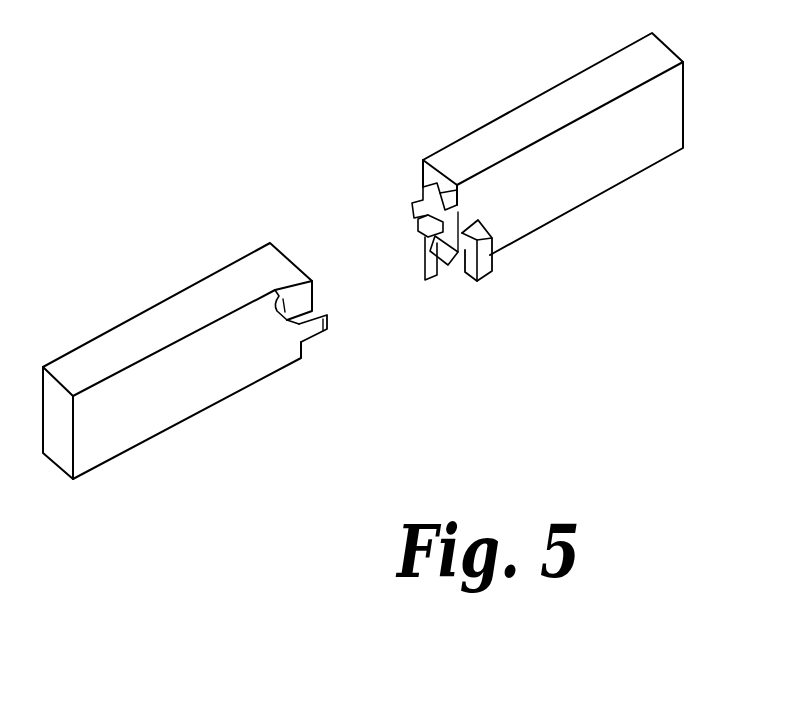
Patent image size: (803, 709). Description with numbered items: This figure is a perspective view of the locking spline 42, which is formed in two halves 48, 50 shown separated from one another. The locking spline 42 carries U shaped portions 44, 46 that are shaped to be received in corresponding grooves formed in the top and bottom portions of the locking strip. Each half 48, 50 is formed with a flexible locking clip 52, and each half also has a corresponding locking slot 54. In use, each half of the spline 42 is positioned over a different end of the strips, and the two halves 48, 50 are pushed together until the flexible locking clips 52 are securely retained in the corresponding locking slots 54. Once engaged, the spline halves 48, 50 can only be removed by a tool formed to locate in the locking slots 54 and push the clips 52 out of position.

The locking spline 42 is at (295, 228).
The U shaped portion 44 is at (420, 198).
The U shaped portion 46 is at (462, 228).
The half 48 is at (135, 420).
The half 50 is at (660, 130).
The flexible locking clip 52 is at (326, 330).
The locking slot 54 is at (277, 307).